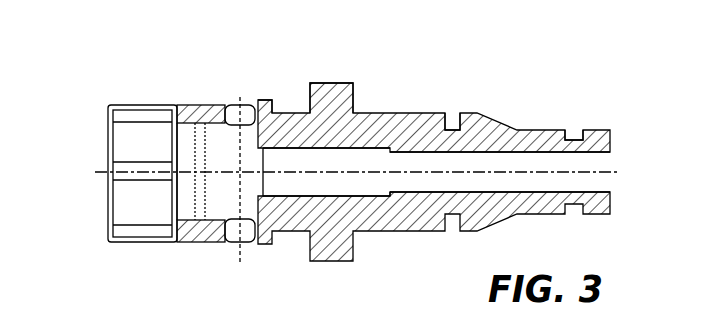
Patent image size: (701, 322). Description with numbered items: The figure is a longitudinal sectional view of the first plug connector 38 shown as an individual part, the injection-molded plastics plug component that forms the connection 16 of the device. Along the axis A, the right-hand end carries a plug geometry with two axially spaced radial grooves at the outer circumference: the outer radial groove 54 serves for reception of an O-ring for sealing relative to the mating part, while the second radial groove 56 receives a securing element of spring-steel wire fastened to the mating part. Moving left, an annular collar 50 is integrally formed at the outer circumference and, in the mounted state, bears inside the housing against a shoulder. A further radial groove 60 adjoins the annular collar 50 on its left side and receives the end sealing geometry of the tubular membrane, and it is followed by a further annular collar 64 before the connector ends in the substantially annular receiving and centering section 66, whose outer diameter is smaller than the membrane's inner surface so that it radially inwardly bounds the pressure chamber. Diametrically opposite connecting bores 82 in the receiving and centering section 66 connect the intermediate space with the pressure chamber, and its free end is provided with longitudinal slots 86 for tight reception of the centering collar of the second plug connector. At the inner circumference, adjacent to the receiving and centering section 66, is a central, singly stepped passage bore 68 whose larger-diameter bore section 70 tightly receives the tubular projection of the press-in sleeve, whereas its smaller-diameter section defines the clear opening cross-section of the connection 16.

The first plug connector 38 is at (505, 82).
The axis / direction A is at (594, 174).
The radial groove 60 is at (292, 112).
The annular collar 50 is at (321, 83).
The annular collar 64 is at (266, 100).
The radial groove 56 is at (455, 128).
The radial groove 54 is at (574, 140).
The connection 16 is at (552, 188).
The bore section 70 is at (389, 197).
The passage bore 68 is at (412, 189).
The receiving and centering section 66 is at (181, 248).
The connecting bores 82 is at (232, 113).
The longitudinal slots 86 is at (140, 233).